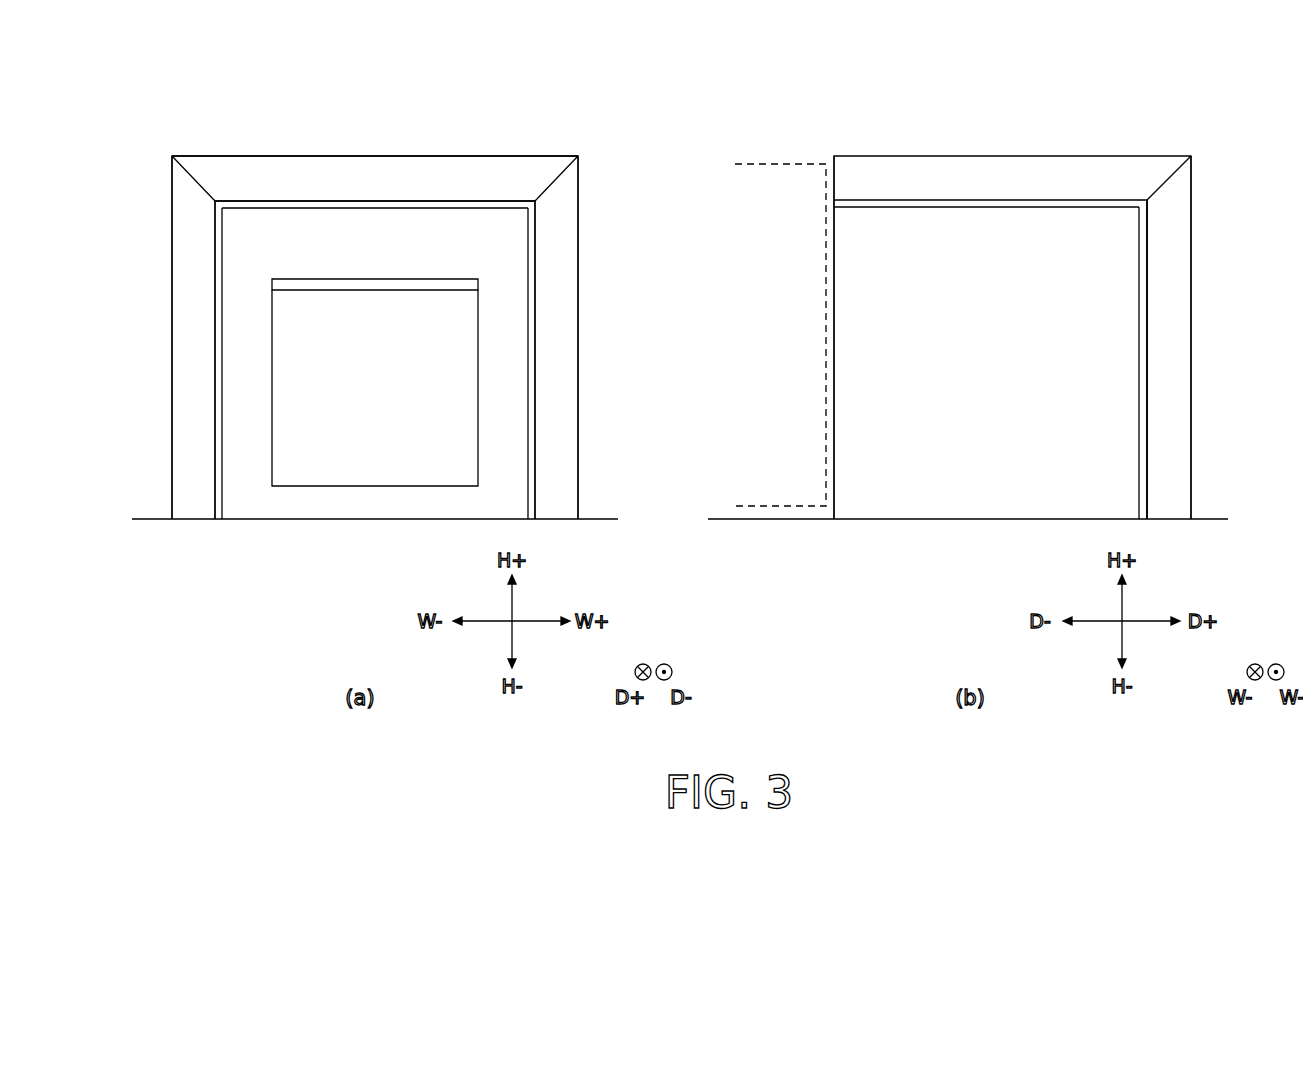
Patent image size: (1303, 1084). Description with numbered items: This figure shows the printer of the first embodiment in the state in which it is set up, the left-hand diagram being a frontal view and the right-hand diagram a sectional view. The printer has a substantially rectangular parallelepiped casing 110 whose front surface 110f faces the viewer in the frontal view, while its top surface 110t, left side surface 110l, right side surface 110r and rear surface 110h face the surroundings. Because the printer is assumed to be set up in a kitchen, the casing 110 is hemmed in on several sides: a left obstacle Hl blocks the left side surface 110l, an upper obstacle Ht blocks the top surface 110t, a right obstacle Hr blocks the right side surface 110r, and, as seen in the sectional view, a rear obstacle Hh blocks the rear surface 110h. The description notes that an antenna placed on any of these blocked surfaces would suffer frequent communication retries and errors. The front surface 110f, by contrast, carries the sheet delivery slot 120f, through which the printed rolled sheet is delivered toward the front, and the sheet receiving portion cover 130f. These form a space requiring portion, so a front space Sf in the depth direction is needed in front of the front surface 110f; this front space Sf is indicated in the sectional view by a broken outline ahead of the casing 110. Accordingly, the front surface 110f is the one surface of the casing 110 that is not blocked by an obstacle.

The casing 110 is at (235, 280).
The top surface 110t is at (418, 203).
The left side surface 110l is at (222, 372).
The right side surface 110r is at (530, 372).
The rear surface 110h is at (1140, 372).
The front surface 110f is at (832, 347).
The sheet delivery slot 120f is at (350, 282).
The sheet receiving portion cover 130f is at (367, 400).
The upper obstacle Ht is at (377, 176).
The right obstacle Hr is at (565, 348).
The left obstacle Hl is at (188, 353).
The rear obstacle Hh is at (1180, 345).
The front space Sf is at (780, 335).